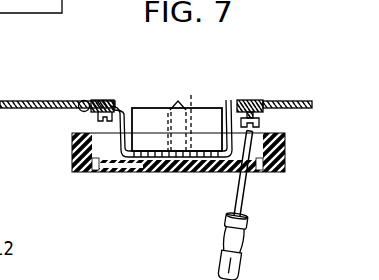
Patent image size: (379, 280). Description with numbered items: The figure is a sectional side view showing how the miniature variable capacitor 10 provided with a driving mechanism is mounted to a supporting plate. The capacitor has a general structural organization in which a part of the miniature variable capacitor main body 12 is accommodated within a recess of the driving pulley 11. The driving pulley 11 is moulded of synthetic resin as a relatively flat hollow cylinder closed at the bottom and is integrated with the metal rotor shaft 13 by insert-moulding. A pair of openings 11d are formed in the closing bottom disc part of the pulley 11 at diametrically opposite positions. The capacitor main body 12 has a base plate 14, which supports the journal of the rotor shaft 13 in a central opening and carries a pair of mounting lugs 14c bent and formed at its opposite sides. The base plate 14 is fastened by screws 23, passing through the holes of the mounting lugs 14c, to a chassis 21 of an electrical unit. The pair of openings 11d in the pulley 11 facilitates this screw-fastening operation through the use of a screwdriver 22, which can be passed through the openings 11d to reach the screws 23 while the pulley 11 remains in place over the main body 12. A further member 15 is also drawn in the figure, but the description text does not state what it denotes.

The miniature variable capacitor 10 is at (247, 95).
The driving pulley 11 is at (286, 161).
The opening 11d is at (95, 171).
The miniature variable capacitor main body 12 is at (242, 57).
The rotor shaft 13 is at (171, 112).
The base plate 14 is at (229, 107).
The mounting lug 14c is at (78, 101).
The box 15 is at (194, 107).
The chassis 21 is at (25, 100).
The screwdriver 22 is at (243, 238).
The screw 23 is at (112, 118).